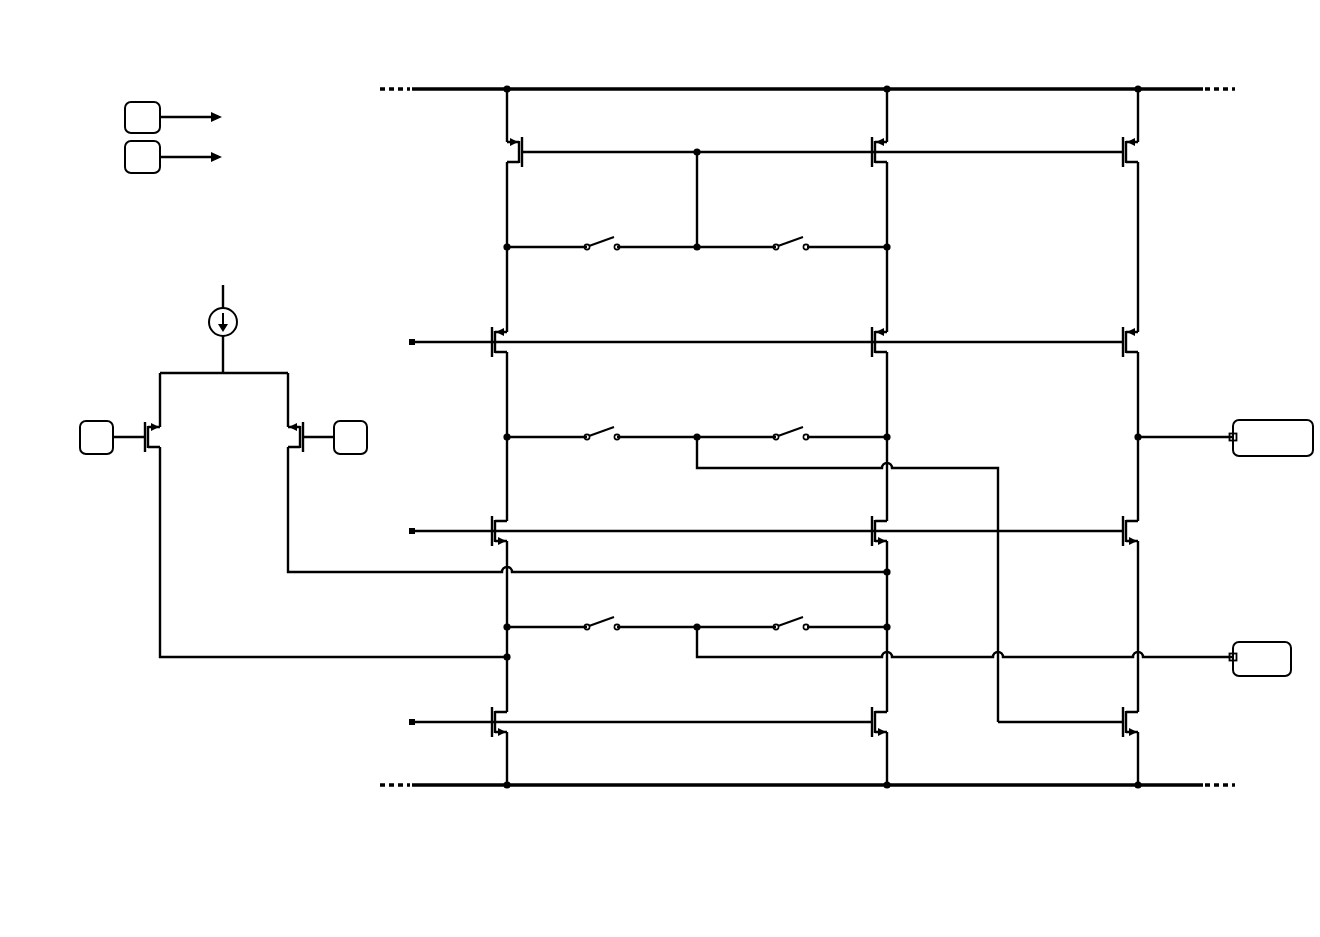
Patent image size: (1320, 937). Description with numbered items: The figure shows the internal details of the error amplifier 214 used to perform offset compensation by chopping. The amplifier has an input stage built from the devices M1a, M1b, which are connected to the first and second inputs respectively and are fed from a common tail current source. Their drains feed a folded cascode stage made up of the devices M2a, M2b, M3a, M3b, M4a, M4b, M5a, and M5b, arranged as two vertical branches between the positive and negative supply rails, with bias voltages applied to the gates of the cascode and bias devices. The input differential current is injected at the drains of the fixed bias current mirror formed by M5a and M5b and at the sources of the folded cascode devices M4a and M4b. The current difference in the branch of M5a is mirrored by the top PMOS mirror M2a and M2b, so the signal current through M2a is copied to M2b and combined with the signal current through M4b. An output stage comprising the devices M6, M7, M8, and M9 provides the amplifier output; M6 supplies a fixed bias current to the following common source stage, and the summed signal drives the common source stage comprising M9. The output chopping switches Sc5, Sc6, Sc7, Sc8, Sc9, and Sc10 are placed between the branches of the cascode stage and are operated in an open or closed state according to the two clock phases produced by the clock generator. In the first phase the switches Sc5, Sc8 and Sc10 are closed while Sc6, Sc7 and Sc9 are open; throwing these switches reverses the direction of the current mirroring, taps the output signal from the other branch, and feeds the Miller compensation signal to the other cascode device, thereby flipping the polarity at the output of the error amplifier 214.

The error amplifier 214 is at (1238, 58).
The input stage NMOS device M1a is at (172, 445).
The input stage NMOS device M1b is at (276, 445).
The PMOS mirror device M2a is at (495, 159).
The PMOS mirror device M2b is at (899, 160).
The folded cascode stage device M3a is at (519, 349).
The folded cascode stage device M3b is at (899, 350).
The folded cascode device M4a is at (519, 538).
The folded cascode device M4b is at (899, 539).
The fixed bias current mirror device M5a is at (519, 730).
The fixed bias current mirror device M5b is at (899, 730).
The output stage device M6 is at (1148, 160).
The output stage device M7 is at (1148, 350).
The output stage device M8 is at (1148, 539).
The common source stage device M9 is at (1148, 730).
The output chopping switch Sc5 is at (618, 242).
The output chopping switch Sc6 is at (808, 242).
The output chopping switch Sc7 is at (618, 432).
The output chopping switch Sc8 is at (808, 432).
The output chopping switch Sc9 is at (618, 622).
The output chopping switch Sc10 is at (813, 622).